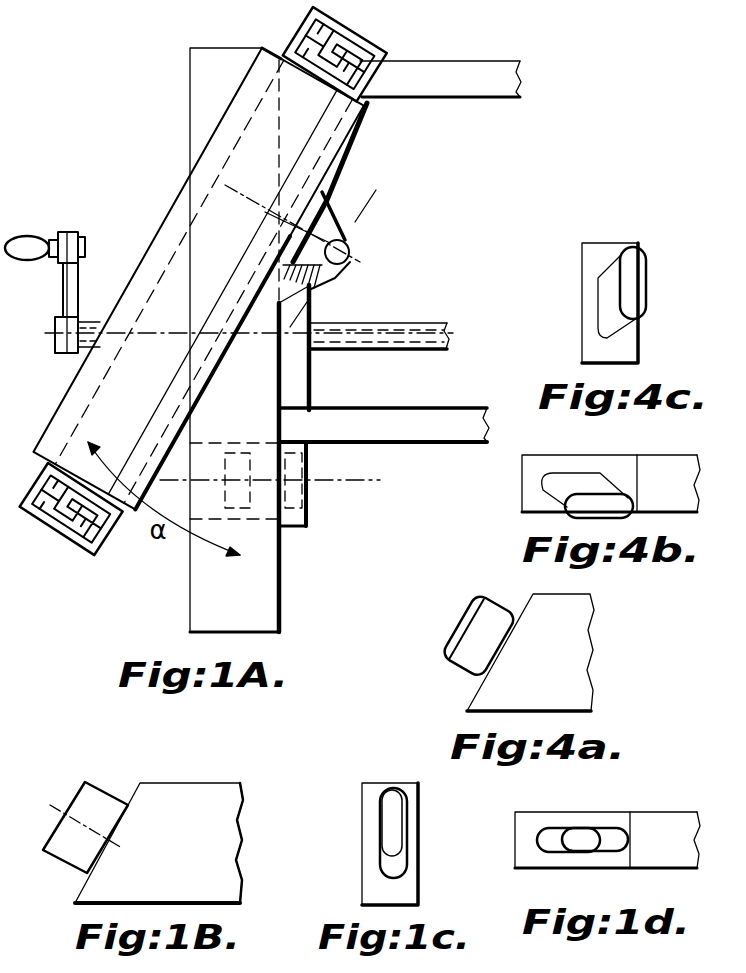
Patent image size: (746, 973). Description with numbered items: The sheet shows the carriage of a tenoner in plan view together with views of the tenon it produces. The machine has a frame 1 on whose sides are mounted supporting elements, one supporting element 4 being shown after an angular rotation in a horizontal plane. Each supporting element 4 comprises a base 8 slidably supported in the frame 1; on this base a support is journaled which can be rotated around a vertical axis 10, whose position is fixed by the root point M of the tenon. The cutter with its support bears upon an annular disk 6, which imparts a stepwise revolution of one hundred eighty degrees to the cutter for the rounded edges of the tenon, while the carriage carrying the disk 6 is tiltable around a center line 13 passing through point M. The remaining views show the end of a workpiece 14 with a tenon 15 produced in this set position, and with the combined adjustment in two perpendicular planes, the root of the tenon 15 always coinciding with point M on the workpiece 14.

In FIG. 1A, the frame 1 is at (442, 73).
In FIG. 1A, the supporting element 4 is at (165, 145).
In FIG. 1A, the annular disk 6 is at (330, 184).
In FIG. 1A, the base 8 is at (268, 600).
In FIG. 1A, the vertical axis 10 is at (350, 249).
In FIG. 1A, the center line 13 is at (372, 202).
In FIG. 4C, the workpiece 14 is at (592, 262).
In FIG. 4B, the workpiece 14 is at (557, 462).
In FIG. 4A, the workpiece 14 is at (578, 636).
In FIG. 1B, the workpiece 14 is at (172, 793).
In FIG. 1C, the workpiece 14 is at (370, 805).
In FIG. 1D, the workpiece 14 is at (573, 820).
In FIG. 4C, the tenon 15 is at (613, 260).
In FIG. 4B, the tenon 15 is at (598, 482).
In FIG. 4A, the tenon 15 is at (497, 615).
In FIG. 1B, the tenon 15 is at (90, 795).
In FIG. 1C, the tenon 15 is at (395, 810).
In FIG. 1D, the tenon 15 is at (605, 835).